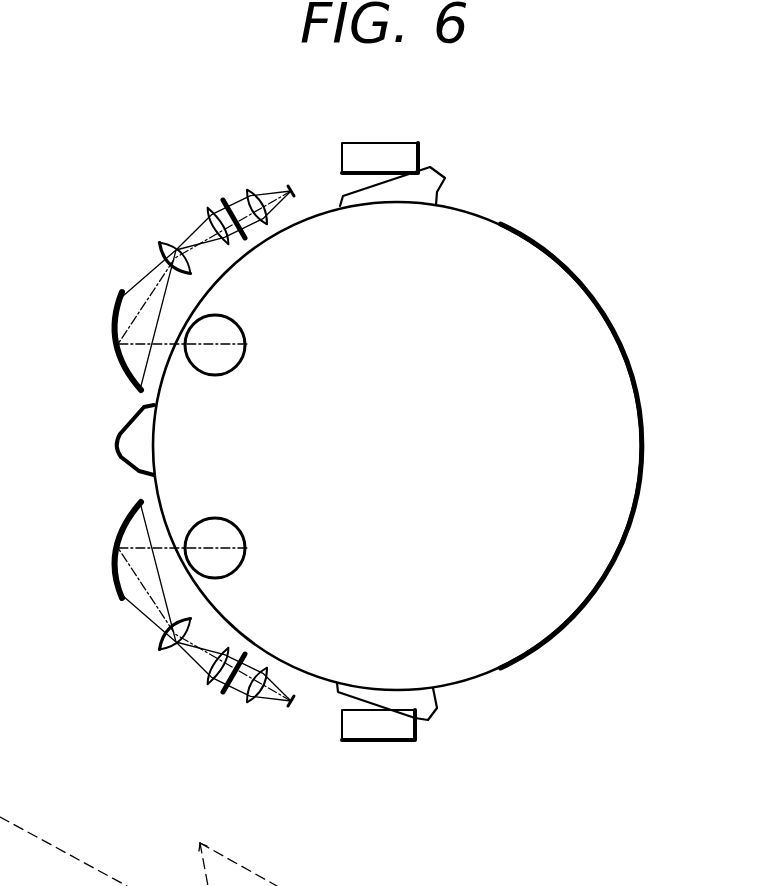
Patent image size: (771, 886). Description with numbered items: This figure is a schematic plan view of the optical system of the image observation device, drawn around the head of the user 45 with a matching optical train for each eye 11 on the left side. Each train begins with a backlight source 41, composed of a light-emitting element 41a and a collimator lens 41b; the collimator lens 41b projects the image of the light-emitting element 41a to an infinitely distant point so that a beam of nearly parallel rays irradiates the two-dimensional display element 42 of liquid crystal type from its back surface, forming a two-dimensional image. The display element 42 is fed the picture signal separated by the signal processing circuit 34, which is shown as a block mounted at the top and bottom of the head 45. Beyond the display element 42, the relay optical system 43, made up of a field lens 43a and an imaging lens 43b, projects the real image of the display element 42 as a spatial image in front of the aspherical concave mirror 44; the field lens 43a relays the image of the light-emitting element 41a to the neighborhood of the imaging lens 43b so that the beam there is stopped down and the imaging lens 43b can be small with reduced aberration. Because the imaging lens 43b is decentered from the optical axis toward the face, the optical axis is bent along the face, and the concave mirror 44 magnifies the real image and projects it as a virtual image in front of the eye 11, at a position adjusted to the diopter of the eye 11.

The eye 11 is at (243, 333).
The signal processing circuit 34 is at (380, 151).
The backlight source 41 is at (299, 480).
The light-emitting element 41a is at (294, 706).
The collimator lens 41b is at (253, 700).
The two-dimensional display element 42 is at (224, 203).
The relay optical system 43 is at (168, 462).
The field lens 43a is at (191, 671).
The imaging lens 43b is at (152, 671).
The aspherical concave mirror 44 is at (120, 345).
The head of the user 45 is at (587, 288).